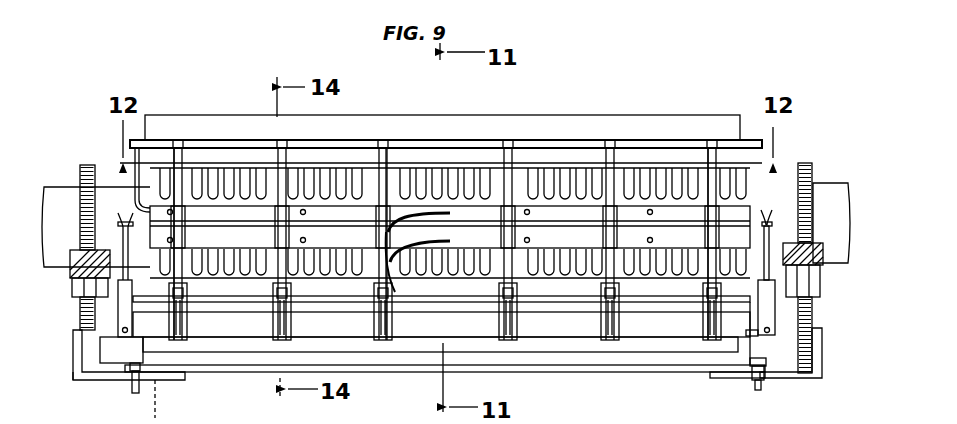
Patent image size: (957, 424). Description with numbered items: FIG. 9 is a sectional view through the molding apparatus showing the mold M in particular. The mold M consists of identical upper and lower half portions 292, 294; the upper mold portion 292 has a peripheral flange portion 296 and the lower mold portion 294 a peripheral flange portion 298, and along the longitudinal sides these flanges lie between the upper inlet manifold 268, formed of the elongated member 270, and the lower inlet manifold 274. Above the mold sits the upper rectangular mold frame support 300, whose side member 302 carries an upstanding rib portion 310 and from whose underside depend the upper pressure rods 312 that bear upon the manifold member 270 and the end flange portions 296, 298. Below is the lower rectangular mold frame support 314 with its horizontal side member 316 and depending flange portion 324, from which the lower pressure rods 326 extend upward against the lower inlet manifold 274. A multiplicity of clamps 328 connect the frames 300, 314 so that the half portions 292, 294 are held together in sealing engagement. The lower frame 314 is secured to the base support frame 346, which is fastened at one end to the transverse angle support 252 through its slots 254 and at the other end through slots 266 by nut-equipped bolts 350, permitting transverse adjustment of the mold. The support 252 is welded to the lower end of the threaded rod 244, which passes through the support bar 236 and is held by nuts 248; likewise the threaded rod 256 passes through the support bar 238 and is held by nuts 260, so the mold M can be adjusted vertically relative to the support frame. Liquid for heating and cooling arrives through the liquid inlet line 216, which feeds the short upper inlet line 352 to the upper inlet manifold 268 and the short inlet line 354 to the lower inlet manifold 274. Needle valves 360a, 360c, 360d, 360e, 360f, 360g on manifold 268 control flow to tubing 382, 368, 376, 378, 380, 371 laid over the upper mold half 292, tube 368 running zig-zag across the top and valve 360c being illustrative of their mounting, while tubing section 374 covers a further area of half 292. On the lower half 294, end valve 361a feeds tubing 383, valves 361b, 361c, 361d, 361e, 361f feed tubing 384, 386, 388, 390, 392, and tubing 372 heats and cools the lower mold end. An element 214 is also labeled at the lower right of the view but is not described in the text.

The threaded rod 244 is at (87, 165).
The support bar 236 is at (73, 270).
The nut 248 is at (73, 250).
The clamp 328 is at (118, 304).
The tubing 383 is at (121, 288).
The slot 254 is at (135, 395).
The transverse angle support 252 is at (80, 381).
The threaded rod 256 is at (802, 163).
The support bar 238 is at (823, 272).
The nut 260 is at (838, 231).
The tubing 372 is at (751, 273).
The slot 266 is at (744, 378).
The nut-equipped bolt 350 is at (759, 392).
The frame member 214 is at (805, 380).
The upper pressure rod 312 is at (196, 160).
The tubing section 374 is at (196, 208).
The side member 302 is at (263, 139).
The upper rectangular mold frame support 300 is at (425, 108).
The mold M is at (345, 163).
The needle valve 360d is at (412, 205).
The elongated member 270 is at (475, 205).
The upstanding rib portion 310 is at (531, 112).
The upper mold half portion 292 is at (540, 160).
The upper inlet manifold 268 is at (561, 198).
The tubing 380 is at (667, 166).
The tubing 371 is at (730, 210).
The tubing 382 is at (168, 210).
The tube 368 is at (298, 205).
The tubing 376 is at (407, 205).
The needle valve 360e is at (527, 208).
The tubing 378 is at (578, 205).
The needle valve 360c is at (190, 207).
The end needle valve 360g is at (352, 163).
The short upper inlet line 352 is at (434, 207).
The needle valve 360f is at (647, 204).
The end needle valve 360a is at (164, 212).
The end valve 361a is at (773, 227).
The peripheral flange portion 296 is at (338, 211).
The peripheral flange portion 298 is at (336, 240).
The tubing 388 is at (442, 240).
The valve 361b is at (265, 283).
The valve 361c is at (308, 262).
The liquid inlet line 216 is at (405, 293).
The short inlet line 354 is at (475, 291).
The valve 361e is at (556, 270).
The valve 361f is at (666, 262).
The tubing 384 is at (213, 325).
The tubing 386 is at (311, 325).
The valve 361d is at (376, 300).
The tubing 392 is at (645, 323).
The lower pressure rod 326 is at (303, 331).
The lower mold half portion 294 is at (262, 292).
The base support frame 346 is at (272, 378).
The horizontal side member 316 is at (480, 318).
The tubing 390 is at (500, 346).
The lower inlet manifold 274 is at (580, 330).
The lower rectangular mold frame support 314 is at (588, 341).
The depending flange portion 324 is at (645, 345).